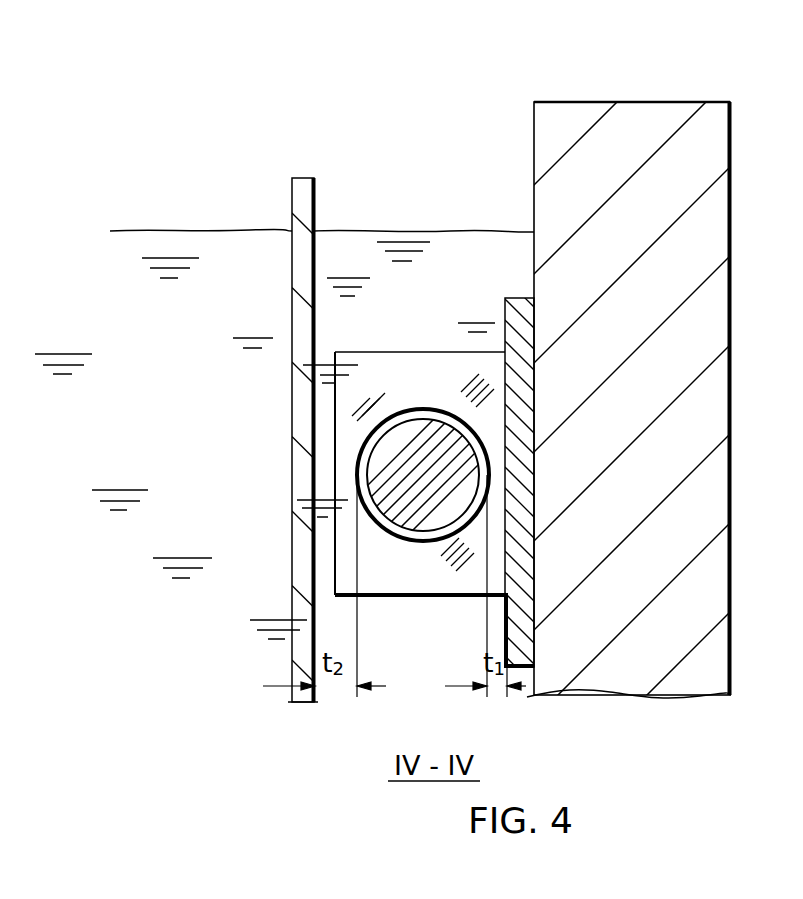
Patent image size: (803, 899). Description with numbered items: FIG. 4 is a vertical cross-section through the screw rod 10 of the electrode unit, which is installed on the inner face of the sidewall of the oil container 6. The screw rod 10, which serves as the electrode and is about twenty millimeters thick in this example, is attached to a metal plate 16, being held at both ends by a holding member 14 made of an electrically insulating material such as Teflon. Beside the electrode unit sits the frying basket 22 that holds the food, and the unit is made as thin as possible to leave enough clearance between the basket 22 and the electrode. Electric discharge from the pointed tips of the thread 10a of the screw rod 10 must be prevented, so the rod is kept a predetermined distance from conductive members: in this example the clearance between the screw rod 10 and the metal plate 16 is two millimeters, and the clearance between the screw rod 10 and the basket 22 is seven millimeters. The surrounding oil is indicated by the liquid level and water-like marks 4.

The water (sea) 4 is at (183, 255).
The oil container 6 is at (641, 118).
The screw rod 10 is at (423, 408).
The thread 10a is at (366, 436).
The holding member 14 is at (425, 578).
The metal plate 16 is at (520, 303).
The frying basket 22 is at (305, 178).